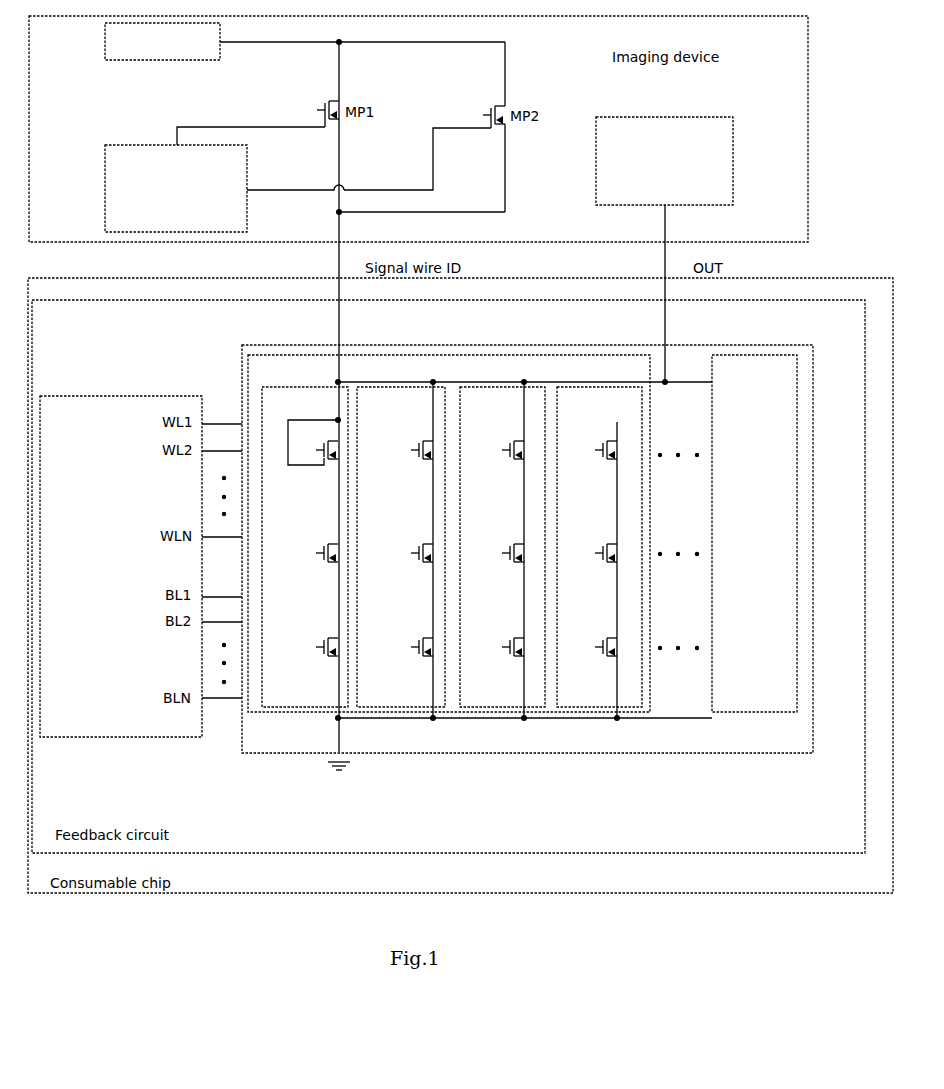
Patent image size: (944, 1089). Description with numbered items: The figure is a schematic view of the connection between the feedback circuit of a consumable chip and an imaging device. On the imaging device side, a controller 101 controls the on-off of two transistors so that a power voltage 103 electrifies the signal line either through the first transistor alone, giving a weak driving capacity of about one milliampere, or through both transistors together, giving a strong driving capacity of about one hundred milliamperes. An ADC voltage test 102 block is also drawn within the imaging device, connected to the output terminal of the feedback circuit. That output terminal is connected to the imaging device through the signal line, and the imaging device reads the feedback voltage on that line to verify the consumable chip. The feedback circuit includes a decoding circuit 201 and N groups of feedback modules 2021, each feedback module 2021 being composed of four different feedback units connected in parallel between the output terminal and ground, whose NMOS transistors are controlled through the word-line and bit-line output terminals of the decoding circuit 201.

The controller 101 is at (176, 188).
The ADC voltage test 102 is at (664, 161).
The power voltage 103 is at (162, 41).
The decoding circuit 201 is at (121, 566).
The feedback module 2021 is at (527, 549).